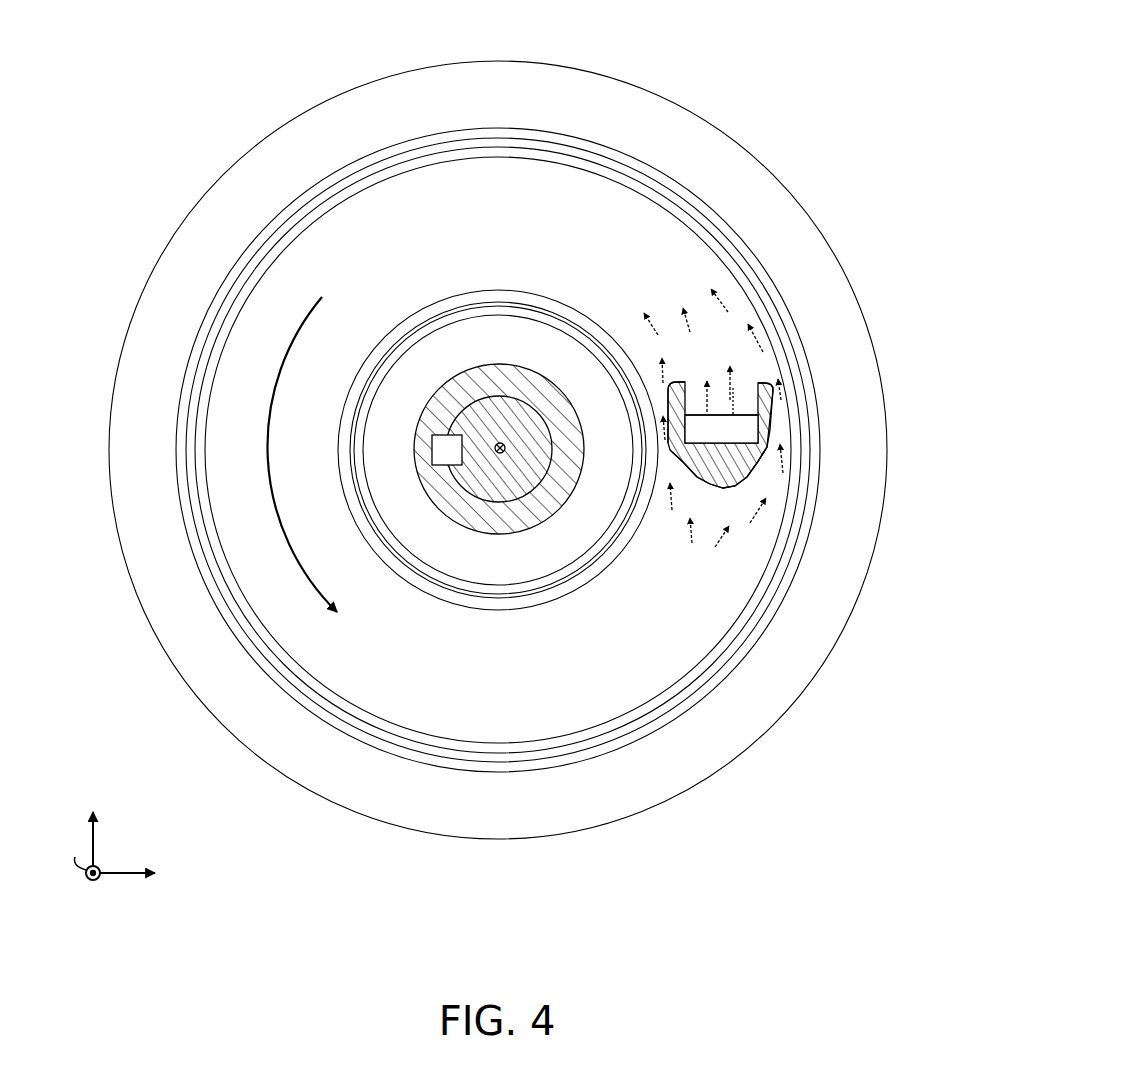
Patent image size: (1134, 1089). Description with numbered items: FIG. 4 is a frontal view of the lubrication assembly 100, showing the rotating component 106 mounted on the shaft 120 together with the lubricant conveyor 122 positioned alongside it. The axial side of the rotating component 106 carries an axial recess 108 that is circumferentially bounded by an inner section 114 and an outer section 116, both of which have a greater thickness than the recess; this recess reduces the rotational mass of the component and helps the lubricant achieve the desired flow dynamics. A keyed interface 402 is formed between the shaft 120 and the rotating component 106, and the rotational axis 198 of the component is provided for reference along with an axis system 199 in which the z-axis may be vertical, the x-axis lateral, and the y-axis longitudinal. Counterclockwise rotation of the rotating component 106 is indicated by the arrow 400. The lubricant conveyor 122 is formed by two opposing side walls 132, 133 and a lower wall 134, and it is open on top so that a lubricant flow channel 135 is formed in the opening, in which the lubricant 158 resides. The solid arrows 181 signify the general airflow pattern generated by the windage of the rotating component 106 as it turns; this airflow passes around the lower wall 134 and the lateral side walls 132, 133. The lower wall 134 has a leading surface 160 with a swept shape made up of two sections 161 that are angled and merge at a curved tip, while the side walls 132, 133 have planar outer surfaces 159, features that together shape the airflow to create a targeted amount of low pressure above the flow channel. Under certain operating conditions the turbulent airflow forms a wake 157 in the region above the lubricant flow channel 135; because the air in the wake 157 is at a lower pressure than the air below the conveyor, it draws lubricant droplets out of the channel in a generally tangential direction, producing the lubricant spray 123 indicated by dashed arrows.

The lubrication assembly 100 is at (926, 81).
The rotating component 106 is at (829, 177).
The axial recess 108 is at (738, 560).
The inner section 114 is at (398, 398).
The outer section 116 is at (199, 250).
The shaft 120 is at (505, 479).
The lubricant conveyor 122 is at (780, 392).
The lubricant spray 123 is at (733, 388).
The side wall 132 is at (780, 428).
The side wall 133 is at (659, 405).
The lower wall 134 is at (767, 497).
The lubricant flow channel 135 is at (696, 385).
The wake 157 is at (706, 355).
The lubricant 158 is at (721, 429).
The planar outer surfaces 159 is at (773, 418).
The leading surface 160 is at (717, 489).
The sections 161 is at (688, 471).
The solid arrows 181 is at (659, 549).
The rotational axis 198 is at (501, 443).
The axis system 199 is at (151, 839).
The arrow 400 is at (273, 517).
The keyed interface 402 is at (445, 440).